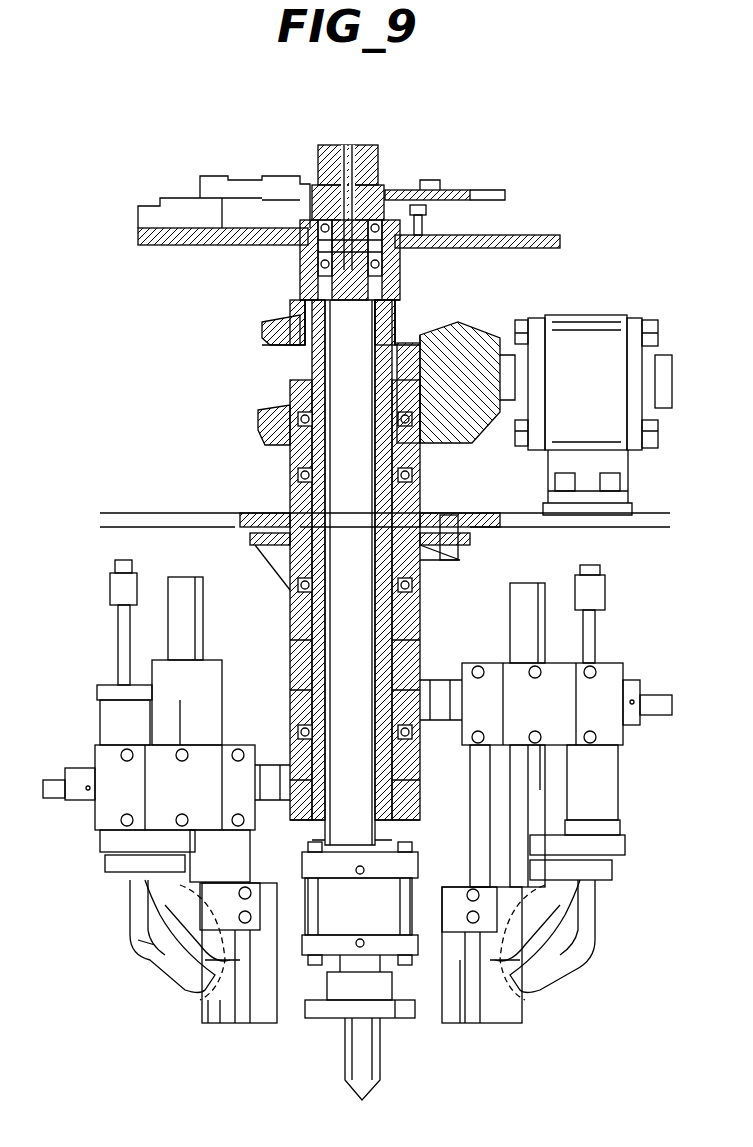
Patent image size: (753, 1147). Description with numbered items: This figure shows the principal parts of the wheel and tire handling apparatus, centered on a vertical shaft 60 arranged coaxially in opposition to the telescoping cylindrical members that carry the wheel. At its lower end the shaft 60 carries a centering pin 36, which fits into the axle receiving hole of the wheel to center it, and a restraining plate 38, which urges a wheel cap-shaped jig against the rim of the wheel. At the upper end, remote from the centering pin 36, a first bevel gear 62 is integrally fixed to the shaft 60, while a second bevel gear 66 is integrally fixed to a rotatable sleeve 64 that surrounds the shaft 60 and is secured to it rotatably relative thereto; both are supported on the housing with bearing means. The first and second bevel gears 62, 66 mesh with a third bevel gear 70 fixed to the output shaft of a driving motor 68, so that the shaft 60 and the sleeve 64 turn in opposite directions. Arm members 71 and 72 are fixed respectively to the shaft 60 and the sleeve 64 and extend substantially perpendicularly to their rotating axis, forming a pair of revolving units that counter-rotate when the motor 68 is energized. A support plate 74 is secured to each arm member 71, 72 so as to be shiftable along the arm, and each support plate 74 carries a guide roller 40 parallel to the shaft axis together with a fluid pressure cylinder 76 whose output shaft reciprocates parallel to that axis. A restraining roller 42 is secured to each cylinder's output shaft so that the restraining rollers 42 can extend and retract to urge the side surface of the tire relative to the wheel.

The centering pin 36 is at (380, 1090).
The restraining plate 38 is at (322, 1018).
The guide roller 40 is at (240, 1023).
The restraining roller 42 is at (170, 972).
The shaft 60 is at (378, 150).
The first bevel gear 62 is at (445, 340).
The rotatable sleeve 64 is at (300, 500).
The second bevel gear 66 is at (272, 418).
The driving motor 68 is at (582, 315).
The third bevel gear 70 is at (475, 340).
The arm member 71 is at (85, 805).
The arm member 72 is at (638, 682).
The support plate 74 is at (96, 828).
The fluid pressure cylinder 76 is at (103, 718).